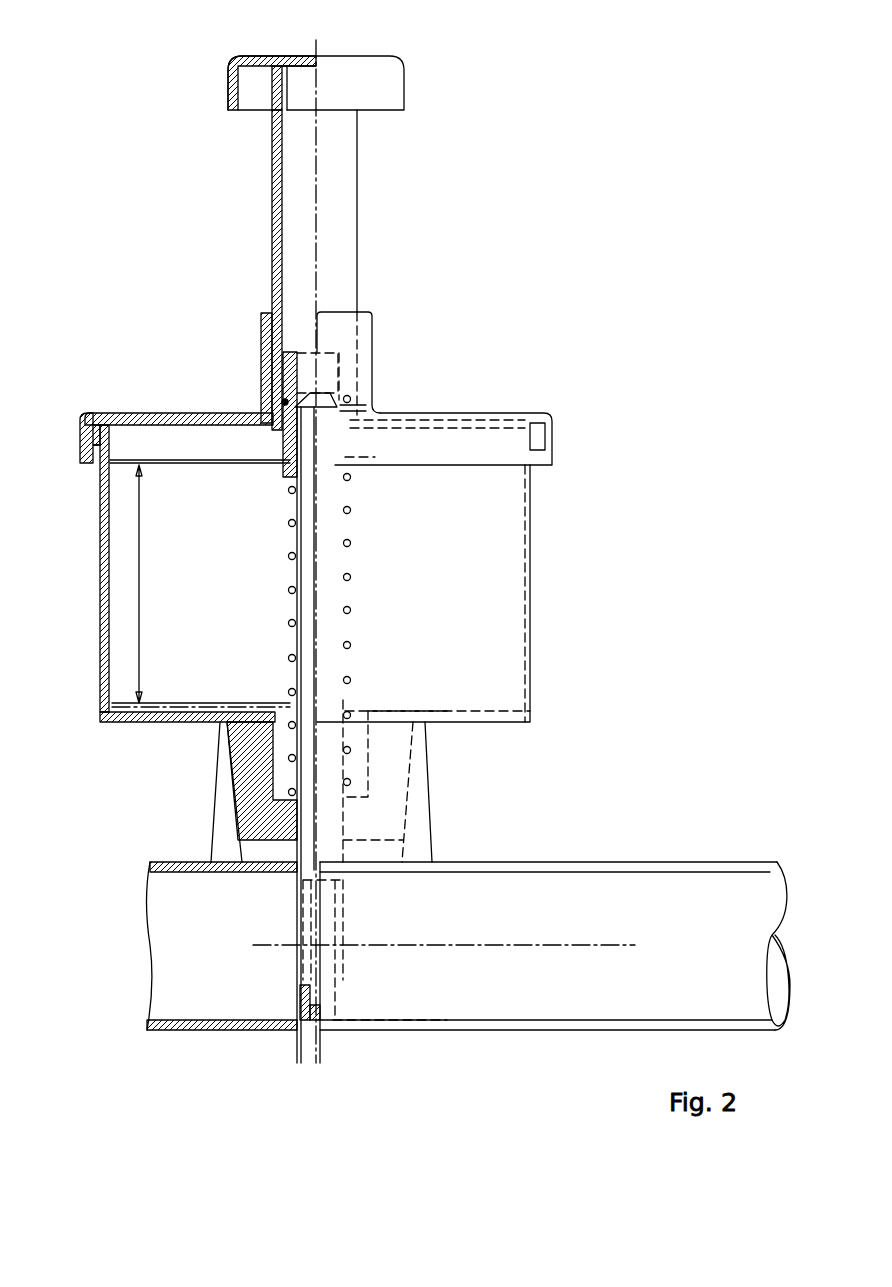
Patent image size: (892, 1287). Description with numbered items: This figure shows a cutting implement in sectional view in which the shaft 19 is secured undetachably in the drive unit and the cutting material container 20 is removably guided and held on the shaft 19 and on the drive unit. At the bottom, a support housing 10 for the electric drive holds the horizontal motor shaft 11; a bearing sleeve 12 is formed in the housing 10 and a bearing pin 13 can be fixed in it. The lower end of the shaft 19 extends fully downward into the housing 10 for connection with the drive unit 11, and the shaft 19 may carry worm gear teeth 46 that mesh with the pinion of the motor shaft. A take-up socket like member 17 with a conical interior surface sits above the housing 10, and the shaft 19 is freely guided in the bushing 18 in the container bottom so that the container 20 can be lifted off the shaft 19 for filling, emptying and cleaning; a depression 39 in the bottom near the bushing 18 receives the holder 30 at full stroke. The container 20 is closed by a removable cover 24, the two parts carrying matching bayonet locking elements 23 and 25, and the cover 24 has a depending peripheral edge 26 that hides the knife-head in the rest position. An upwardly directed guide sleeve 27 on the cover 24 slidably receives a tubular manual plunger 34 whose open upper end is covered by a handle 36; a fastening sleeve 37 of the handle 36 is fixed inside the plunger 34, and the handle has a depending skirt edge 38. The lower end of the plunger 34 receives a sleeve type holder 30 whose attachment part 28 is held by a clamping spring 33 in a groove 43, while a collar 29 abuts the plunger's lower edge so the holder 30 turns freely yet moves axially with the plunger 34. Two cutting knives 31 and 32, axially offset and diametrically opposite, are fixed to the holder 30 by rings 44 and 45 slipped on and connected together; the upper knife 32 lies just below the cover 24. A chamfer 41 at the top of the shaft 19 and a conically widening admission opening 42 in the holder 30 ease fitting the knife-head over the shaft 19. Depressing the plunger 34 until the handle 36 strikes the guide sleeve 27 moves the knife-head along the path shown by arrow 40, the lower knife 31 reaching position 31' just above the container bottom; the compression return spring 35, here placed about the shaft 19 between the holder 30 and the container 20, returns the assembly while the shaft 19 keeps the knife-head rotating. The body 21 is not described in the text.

The support housing 10 is at (190, 1030).
The motor shaft 11 is at (520, 947).
The bearing sleeve 12 is at (300, 997).
The bearing pin 13 is at (315, 1020).
The take-up socket like member 17 is at (220, 843).
The bushing 18 is at (238, 815).
The shaft 19 is at (290, 609).
The cutting material container 20 is at (535, 562).
The body 21 is at (240, 768).
The bayonet locking element 23 is at (97, 425).
The cover 24 is at (145, 413).
The bayonet locking element 25 is at (85, 425).
The peripheral edge 26 is at (88, 463).
The guide sleeve 27 is at (372, 327).
The attachment part 28 is at (283, 360).
The collar 29 is at (366, 412).
The sleeve type holder 30 is at (287, 447).
The cutting knife 31 is at (200, 419).
The position of cutting knife 31' is at (201, 676).
The cutting knife 32 is at (475, 413).
The clamping spring 33 is at (282, 401).
The tubular manual plunger 34 is at (357, 200).
The compression return spring 35 is at (288, 558).
The handle 36 is at (306, 56).
The fastening sleeve 37 is at (283, 100).
The depending skirt edge 38 is at (404, 100).
The depression 39 is at (282, 720).
The arrow 40 is at (139, 597).
The chamfer 41 is at (300, 395).
The conically widening admission opening 42 is at (293, 478).
The groove 43 is at (350, 392).
The ring 44 is at (350, 430).
The ring 45 is at (350, 464).
The worm gear teeth 46 is at (340, 916).